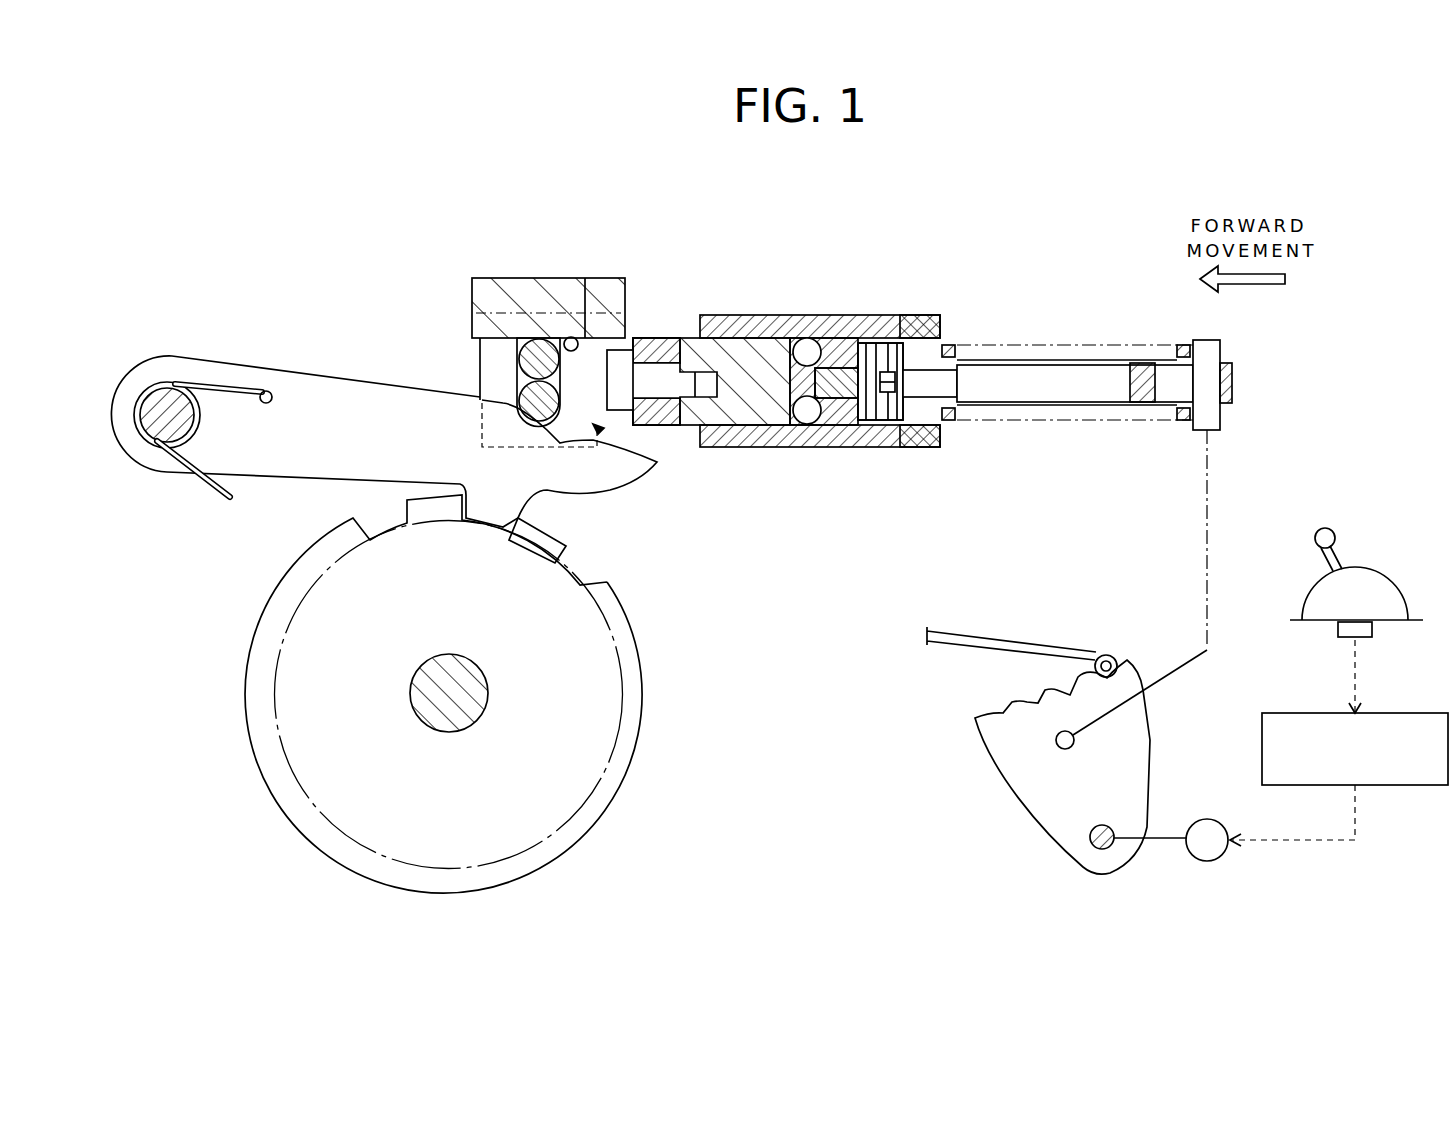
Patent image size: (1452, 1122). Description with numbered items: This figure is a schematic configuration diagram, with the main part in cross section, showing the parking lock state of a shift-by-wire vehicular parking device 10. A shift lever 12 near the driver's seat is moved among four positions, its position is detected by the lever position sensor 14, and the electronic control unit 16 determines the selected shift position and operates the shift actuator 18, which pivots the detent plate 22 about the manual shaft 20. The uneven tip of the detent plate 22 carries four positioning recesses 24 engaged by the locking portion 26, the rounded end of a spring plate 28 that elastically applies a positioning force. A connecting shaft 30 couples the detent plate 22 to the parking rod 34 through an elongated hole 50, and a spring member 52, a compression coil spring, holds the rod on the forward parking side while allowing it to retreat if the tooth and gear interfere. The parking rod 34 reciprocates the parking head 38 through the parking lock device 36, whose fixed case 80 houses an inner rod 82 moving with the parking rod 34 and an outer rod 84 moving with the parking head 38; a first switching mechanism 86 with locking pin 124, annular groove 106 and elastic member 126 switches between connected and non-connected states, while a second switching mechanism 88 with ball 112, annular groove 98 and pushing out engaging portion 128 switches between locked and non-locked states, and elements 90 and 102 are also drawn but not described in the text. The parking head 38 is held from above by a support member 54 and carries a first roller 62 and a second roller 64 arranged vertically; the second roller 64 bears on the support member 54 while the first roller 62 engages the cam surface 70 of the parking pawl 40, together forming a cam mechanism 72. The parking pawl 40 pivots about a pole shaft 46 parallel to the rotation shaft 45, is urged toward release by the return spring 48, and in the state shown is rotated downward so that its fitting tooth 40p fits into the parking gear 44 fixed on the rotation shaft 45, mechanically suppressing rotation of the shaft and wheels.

The vehicular parking device 10 is at (372, 213).
The shift lever 12 is at (1330, 530).
The lever position sensor 14 is at (1345, 637).
The electronic control unit 16 is at (1390, 713).
The shift actuator 18 is at (1212, 861).
The manual shaft 20 is at (1105, 849).
The detent plate 22 is at (1015, 778).
The positioning recesses 24 is at (998, 716).
The locking portion 26 is at (1107, 654).
The spring plate 28 is at (963, 633).
The connecting shaft 30 is at (1221, 418).
The parking rod 34 is at (1040, 393).
The parking lock device 36 is at (926, 255).
The parking head 38 is at (465, 353).
The parking pawl 40 is at (318, 460).
The fitting tooth 40p is at (553, 560).
The parking gear 44 is at (617, 740).
The rotation shaft 45 is at (430, 694).
The pole shaft 46 is at (163, 405).
The return spring 48 is at (213, 388).
The elongated hole 50 is at (1160, 350).
The spring member 52 is at (1180, 418).
The support member 54 is at (535, 297).
The first roller 62 is at (562, 340).
The second roller 64 is at (488, 278).
The cam surface 70 is at (593, 430).
The cam mechanism 72 is at (622, 445).
The fixed case 80 is at (736, 308).
The inner rod 82 is at (944, 326).
The outer rod 84 is at (753, 447).
The first switching mechanism 86 is at (653, 378).
The second switching mechanism 88 is at (809, 336).
The housing opening 90 is at (722, 315).
The annular groove 98 is at (830, 330).
The lower flange 102 is at (719, 447).
The annular groove 106 is at (920, 318).
The ball 112 is at (784, 327).
The locking pin 124 is at (880, 330).
The elastic member 126 is at (838, 450).
The pushing out engaging portion 128 is at (755, 330).